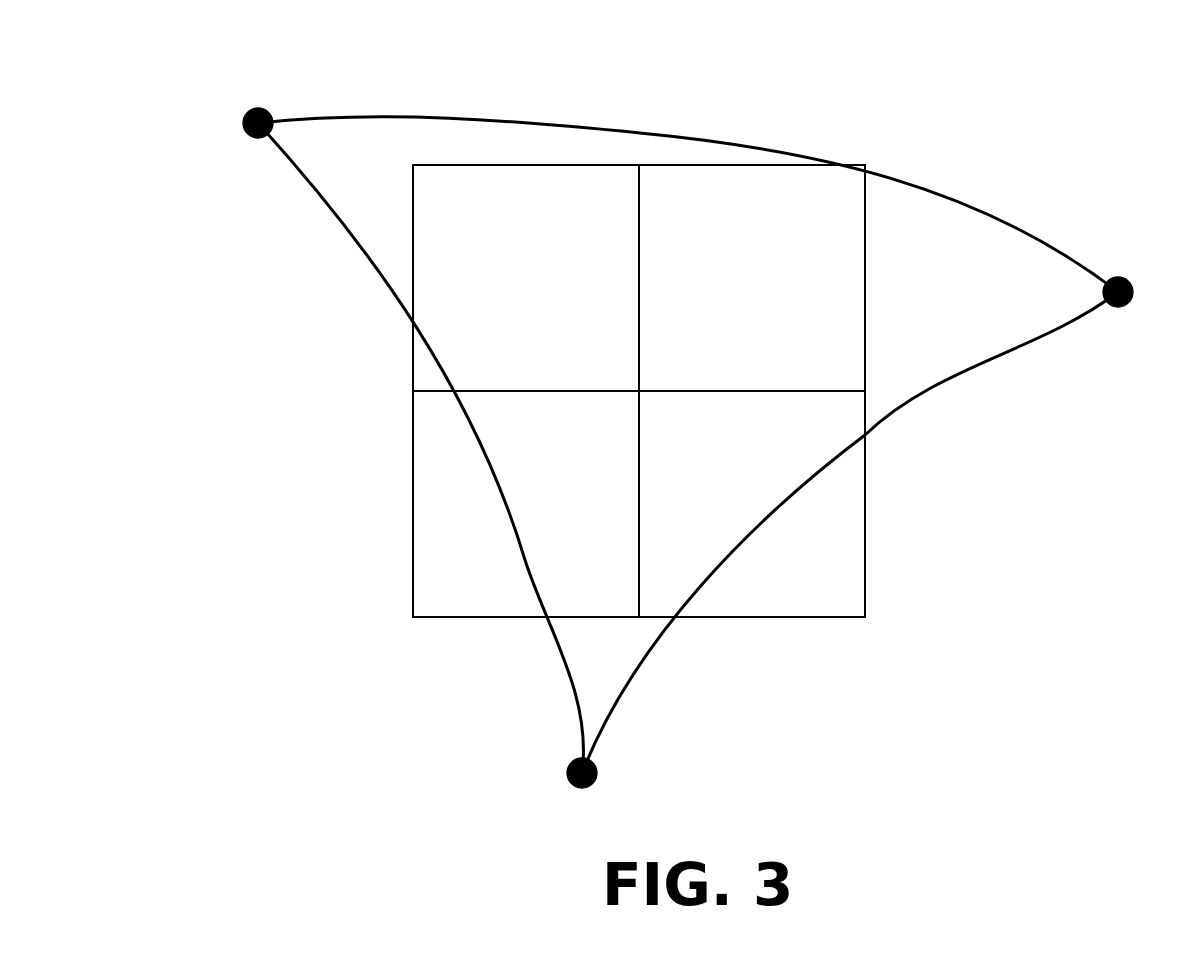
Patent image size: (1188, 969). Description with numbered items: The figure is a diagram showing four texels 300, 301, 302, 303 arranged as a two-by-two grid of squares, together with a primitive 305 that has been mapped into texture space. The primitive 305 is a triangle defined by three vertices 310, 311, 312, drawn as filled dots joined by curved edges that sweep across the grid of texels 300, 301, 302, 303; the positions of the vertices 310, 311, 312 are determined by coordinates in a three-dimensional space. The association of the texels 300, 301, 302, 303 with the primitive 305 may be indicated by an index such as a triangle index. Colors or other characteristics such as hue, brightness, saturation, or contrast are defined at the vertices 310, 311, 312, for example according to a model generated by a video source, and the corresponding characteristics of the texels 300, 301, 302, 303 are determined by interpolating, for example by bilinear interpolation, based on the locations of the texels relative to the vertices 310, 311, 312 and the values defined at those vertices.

The texel 300 is at (543, 290).
The texel 301 is at (770, 290).
The texel 302 is at (543, 515).
The texel 303 is at (770, 515).
The primitive 305 is at (322, 239).
The vertex 310 is at (258, 105).
The vertex 311 is at (1135, 297).
The vertex 312 is at (581, 792).